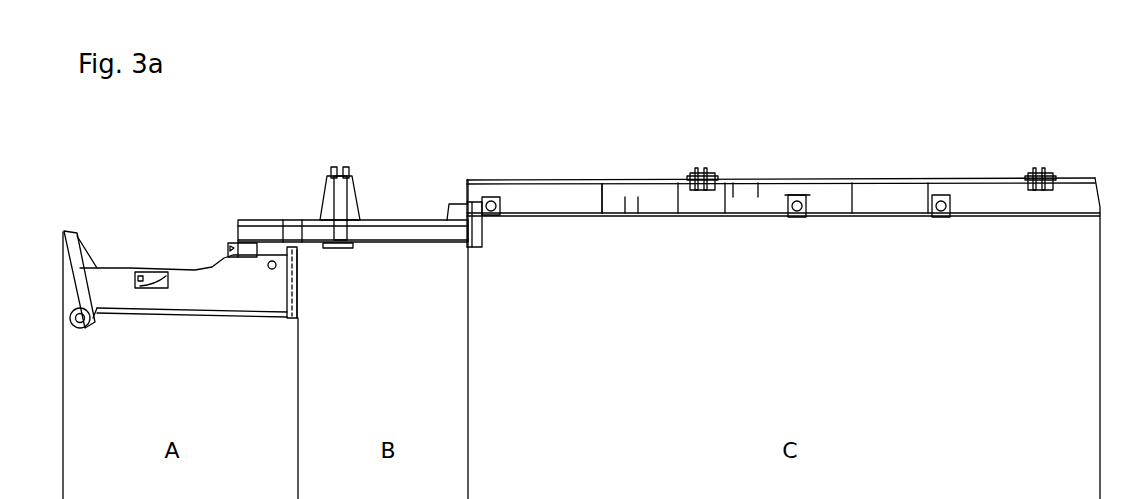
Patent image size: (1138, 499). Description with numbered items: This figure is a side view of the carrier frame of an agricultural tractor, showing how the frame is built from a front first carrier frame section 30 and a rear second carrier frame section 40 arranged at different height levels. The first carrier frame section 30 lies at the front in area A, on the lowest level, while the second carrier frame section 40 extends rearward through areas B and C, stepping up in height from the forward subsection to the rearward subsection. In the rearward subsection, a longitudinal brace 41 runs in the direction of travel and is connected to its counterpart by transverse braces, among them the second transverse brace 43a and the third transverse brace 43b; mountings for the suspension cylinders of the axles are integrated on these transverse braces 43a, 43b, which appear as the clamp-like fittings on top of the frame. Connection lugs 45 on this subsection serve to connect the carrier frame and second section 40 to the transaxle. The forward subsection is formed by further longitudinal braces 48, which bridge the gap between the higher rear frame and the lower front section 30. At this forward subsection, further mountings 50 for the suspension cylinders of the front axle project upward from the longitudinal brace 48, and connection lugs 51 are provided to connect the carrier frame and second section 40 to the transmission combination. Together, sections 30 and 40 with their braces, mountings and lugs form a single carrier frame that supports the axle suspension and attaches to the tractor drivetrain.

The first carrier frame section 30 is at (163, 252).
The second carrier frame section 40 is at (451, 248).
The longitudinal brace 41 is at (647, 193).
The second transverse brace 43a is at (1043, 170).
The third transverse brace 43b is at (713, 170).
The connection lugs 45 is at (627, 216).
The longitudinal braces 48 is at (410, 230).
The mountings 50 is at (348, 200).
The connection lugs 51 is at (299, 256).